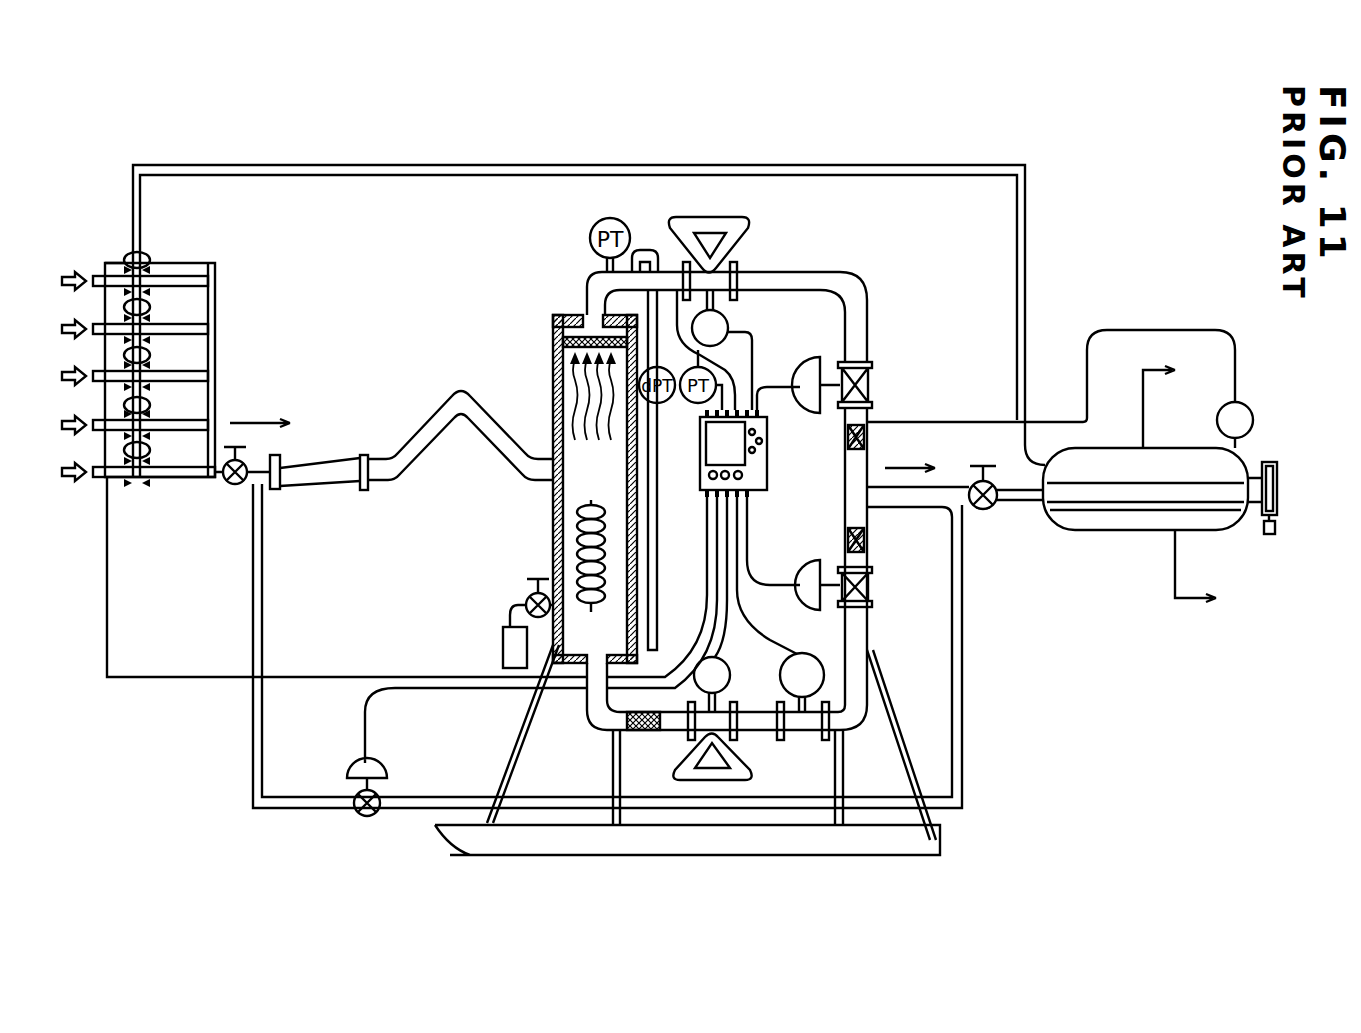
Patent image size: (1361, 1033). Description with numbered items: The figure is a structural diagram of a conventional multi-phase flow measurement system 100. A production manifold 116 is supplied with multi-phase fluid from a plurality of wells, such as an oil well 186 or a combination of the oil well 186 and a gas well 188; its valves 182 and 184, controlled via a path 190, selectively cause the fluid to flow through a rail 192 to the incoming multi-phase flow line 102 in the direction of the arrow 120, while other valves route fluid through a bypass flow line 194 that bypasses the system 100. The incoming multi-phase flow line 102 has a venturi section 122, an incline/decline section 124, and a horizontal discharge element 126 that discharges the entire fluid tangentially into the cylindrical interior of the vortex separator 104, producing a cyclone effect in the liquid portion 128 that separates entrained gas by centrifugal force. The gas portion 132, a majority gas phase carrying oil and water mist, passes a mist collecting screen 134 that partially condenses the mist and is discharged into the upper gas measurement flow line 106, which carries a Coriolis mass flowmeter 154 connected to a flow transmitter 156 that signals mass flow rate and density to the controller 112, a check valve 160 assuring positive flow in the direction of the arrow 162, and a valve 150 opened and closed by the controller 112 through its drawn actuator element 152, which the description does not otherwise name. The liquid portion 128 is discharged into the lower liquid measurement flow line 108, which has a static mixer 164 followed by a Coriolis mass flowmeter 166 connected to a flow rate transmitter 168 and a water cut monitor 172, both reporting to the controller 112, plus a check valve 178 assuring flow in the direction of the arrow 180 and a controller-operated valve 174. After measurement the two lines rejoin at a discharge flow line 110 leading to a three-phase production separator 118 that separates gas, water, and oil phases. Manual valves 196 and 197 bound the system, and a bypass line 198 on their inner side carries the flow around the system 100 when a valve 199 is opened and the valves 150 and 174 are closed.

The multi-phase flow measurement system 100 is at (876, 266).
The incoming multi-phase flow line 102 is at (425, 420).
The vortex separator 104 is at (563, 356).
The gas measurement flow line 106 is at (840, 272).
The liquid measurement flow line 108 is at (870, 630).
The discharge flow line 110 is at (975, 480).
The controller 112 is at (768, 472).
The production manifold 116 is at (216, 285).
The three-phase production separator 118 is at (1113, 447).
The arrow 120 is at (250, 421).
The venturi section 122 is at (304, 488).
The incline/decline section 124 is at (461, 390).
The horizontal discharge element 126 is at (553, 483).
The liquid portion 128 is at (577, 548).
The gas portion 132 is at (573, 388).
The mist collecting screen 134 is at (560, 313).
The valve 150 is at (830, 362).
The valve actuator 152 is at (790, 384).
The Coriolis mass flowmeter 154 is at (748, 232).
The flow transmitter 156 is at (730, 322).
The check valve 160 is at (868, 440).
The arrow 162 is at (846, 438).
The static mixer 164 is at (641, 732).
The Coriolis mass flowmeter 166 is at (752, 768).
The flow rate transmitter 168 is at (731, 663).
The water cut monitor 172 is at (812, 655).
The valve 174 is at (810, 560).
The check valve 178 is at (866, 540).
The arrow 180 is at (872, 568).
The valve 182 is at (152, 258).
The valve 184 is at (152, 308).
The oil well 186 is at (108, 266).
The gas well 188 is at (56, 332).
The path 190 is at (385, 676).
The rail 192 is at (216, 352).
The bypass flow line 194 is at (425, 165).
The manual valve 196 is at (230, 486).
The manual valve 197 is at (988, 512).
The bypass line 198 is at (303, 797).
The valve 199 is at (389, 769).